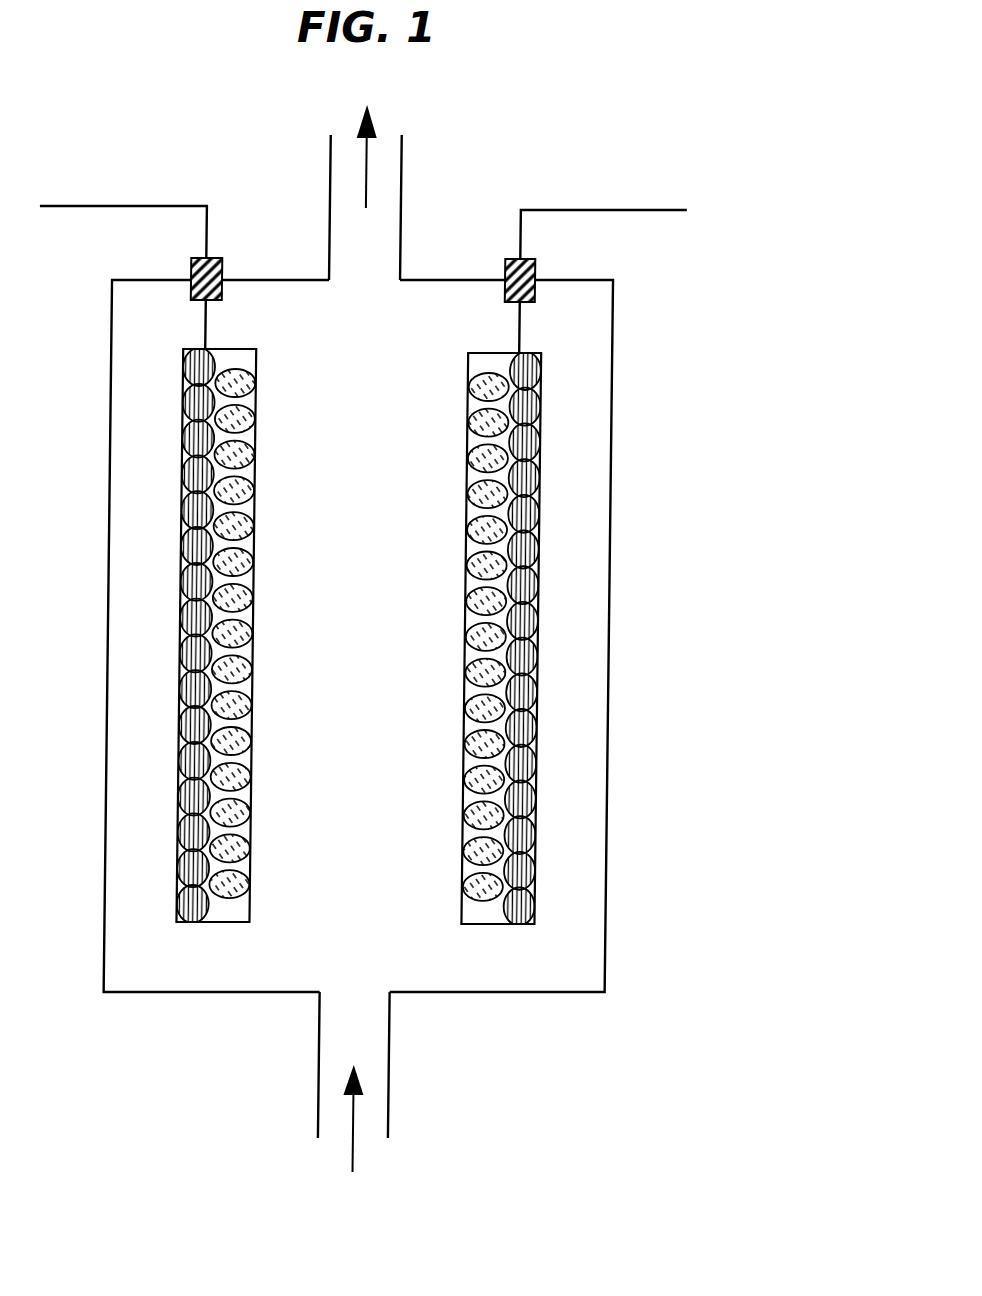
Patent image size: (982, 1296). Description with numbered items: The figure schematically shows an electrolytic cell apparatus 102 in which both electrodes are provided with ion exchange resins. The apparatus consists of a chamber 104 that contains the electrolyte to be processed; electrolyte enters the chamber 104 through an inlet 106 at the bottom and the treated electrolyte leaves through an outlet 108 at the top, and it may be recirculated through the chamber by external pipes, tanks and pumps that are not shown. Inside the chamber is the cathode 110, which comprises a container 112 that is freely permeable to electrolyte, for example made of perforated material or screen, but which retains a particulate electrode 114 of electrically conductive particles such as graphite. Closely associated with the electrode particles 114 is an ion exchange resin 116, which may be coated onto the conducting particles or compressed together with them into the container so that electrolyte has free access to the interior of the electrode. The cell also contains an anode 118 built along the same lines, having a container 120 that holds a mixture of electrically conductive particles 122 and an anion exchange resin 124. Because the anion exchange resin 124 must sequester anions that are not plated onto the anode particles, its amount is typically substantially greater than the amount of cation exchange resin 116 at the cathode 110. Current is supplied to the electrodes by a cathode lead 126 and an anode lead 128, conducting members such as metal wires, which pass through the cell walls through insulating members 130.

The electrolytic cell apparatus 102 is at (668, 398).
The chamber 104 is at (612, 677).
The inlet 106 is at (383, 1148).
The outlet 108 is at (392, 124).
The cathode 110 is at (271, 413).
The container 112 is at (185, 516).
The particulate electrode 114 is at (190, 797).
The ion exchange resin 116 is at (238, 780).
The anode 118 is at (482, 347).
The container 120 is at (538, 561).
The electrically conductive particles 122 is at (522, 727).
The anion exchange resin 124 is at (488, 862).
The cathode lead 126 is at (172, 206).
The anode lead 128 is at (582, 210).
The insulating members 130 is at (191, 268).